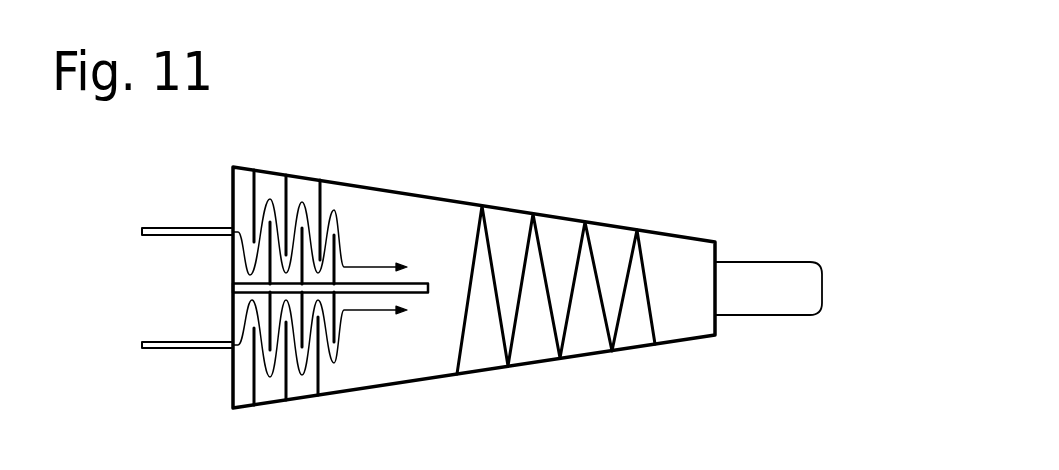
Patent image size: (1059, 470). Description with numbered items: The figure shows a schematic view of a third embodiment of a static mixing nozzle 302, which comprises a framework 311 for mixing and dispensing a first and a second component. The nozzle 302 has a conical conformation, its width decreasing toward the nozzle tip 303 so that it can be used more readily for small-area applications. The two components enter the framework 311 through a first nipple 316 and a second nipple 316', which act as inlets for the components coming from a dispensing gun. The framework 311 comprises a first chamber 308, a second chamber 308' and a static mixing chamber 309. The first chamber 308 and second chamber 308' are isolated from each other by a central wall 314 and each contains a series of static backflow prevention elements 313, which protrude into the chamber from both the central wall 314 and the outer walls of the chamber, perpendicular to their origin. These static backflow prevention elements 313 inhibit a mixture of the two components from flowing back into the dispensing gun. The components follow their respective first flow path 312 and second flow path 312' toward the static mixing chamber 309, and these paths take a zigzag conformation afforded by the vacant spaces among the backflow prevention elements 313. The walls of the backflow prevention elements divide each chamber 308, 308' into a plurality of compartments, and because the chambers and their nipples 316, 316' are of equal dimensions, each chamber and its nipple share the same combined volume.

The static mixing nozzle 302 is at (670, 372).
The nozzle tip 303 is at (768, 282).
The first chamber 308 is at (281, 375).
The second chamber 308' is at (286, 197).
The static mixing chamber 309 is at (606, 254).
The framework 311 is at (424, 274).
The first flow path 312 is at (329, 372).
The second flow path 312' is at (341, 209).
The static backflow prevention elements 313 is at (348, 217).
The central wall 314 is at (428, 296).
The first nipple 316 is at (163, 373).
The second nipple 316' is at (162, 203).